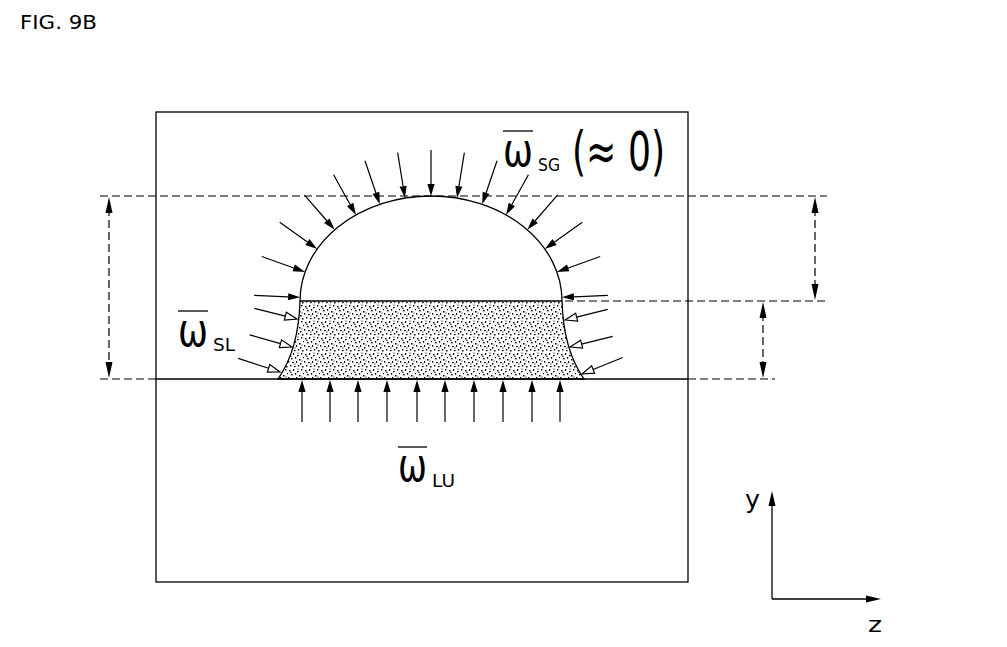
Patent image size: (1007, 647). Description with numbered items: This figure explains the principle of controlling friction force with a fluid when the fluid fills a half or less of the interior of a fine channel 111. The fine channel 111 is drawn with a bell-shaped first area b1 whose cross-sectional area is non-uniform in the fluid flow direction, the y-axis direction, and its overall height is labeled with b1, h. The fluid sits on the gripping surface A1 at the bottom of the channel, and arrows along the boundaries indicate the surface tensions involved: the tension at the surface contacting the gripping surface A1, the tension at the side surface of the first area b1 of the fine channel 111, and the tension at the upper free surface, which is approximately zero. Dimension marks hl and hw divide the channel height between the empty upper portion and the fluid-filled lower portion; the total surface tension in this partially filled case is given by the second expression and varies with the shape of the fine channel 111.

The fine channel 111 is at (447, 162).
The gripping surface A1 is at (648, 381).
The first area b1 is at (71, 287).
The liquid height hl is at (832, 248).
The wetted height hw is at (786, 340).